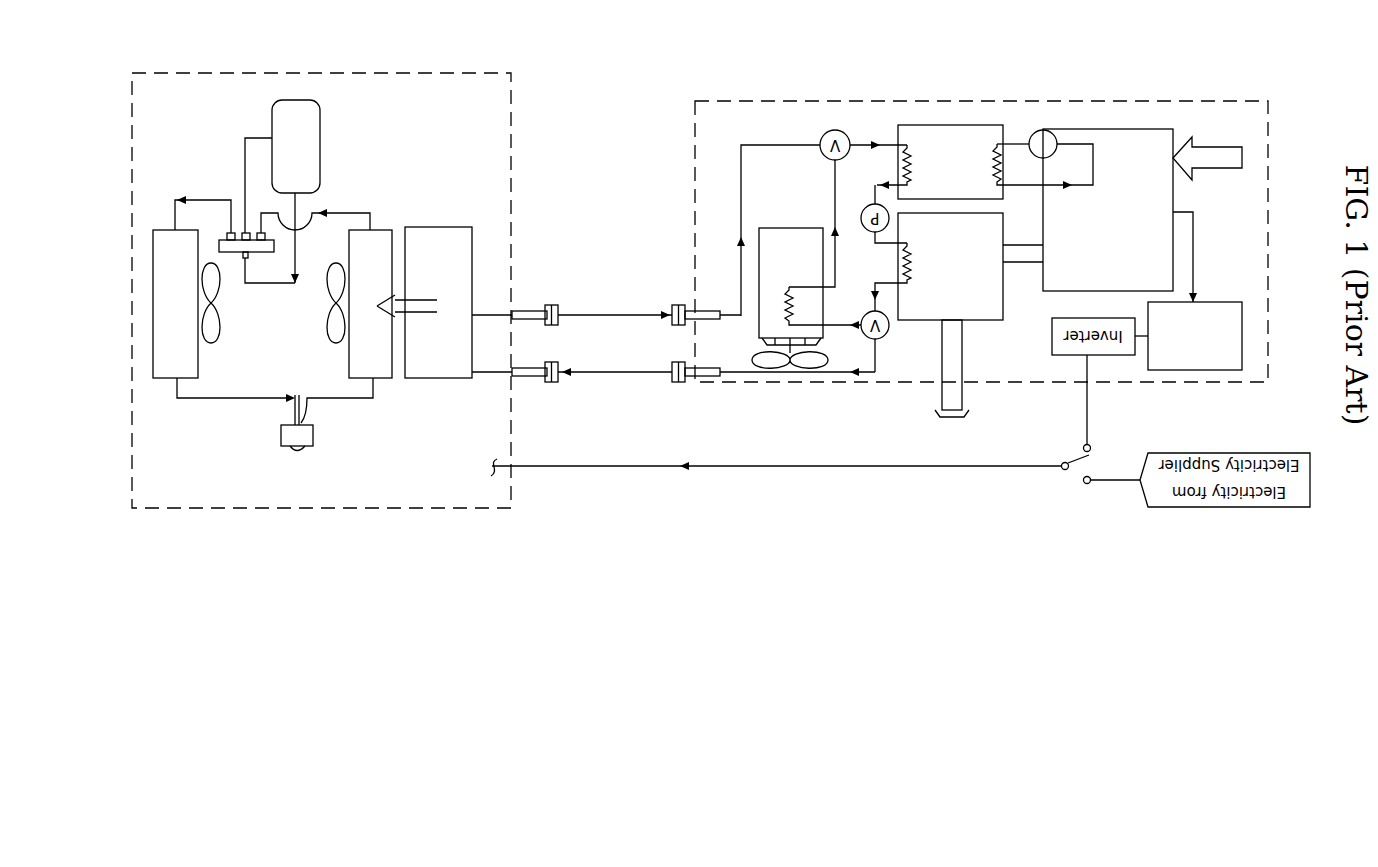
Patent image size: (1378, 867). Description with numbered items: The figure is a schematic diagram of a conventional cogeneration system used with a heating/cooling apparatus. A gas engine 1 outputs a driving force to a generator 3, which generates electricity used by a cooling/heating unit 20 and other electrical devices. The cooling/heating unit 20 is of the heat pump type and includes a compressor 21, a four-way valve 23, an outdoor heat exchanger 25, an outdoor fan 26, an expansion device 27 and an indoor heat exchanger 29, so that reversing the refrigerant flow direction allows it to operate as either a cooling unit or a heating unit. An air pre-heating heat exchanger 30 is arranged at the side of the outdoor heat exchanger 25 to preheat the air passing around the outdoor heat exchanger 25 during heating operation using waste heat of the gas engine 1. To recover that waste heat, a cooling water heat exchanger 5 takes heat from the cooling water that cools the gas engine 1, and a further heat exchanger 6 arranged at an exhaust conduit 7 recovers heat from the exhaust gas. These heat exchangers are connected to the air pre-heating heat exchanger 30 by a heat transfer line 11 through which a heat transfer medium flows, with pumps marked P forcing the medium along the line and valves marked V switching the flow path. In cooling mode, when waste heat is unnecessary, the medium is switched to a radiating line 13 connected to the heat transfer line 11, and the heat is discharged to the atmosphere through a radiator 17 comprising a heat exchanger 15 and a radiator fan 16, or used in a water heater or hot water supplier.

The gas engine 1 is at (1159, 239).
The generator 3 is at (1233, 340).
The cooling water heat exchanger 5 is at (927, 130).
The cooling water heat exchanger 6 is at (977, 230).
The exhaust conduit 7 is at (955, 353).
The heat transfer line 11 is at (741, 193).
The radiating line 13 is at (833, 187).
The heat exchanger 15 is at (782, 362).
The radiator fan 16 is at (818, 362).
The radiator 17 is at (786, 390).
The cooling/heating unit 20 is at (152, 531).
The compressor 21 is at (300, 113).
The four-way valve 23 is at (237, 240).
The outdoor heat exchanger 25 is at (383, 243).
The outdoor fan 26 is at (335, 267).
The expansion device 27 is at (307, 432).
The indoor heat exchanger 29 is at (167, 302).
The air pre-heating heat exchanger 30 is at (440, 240).